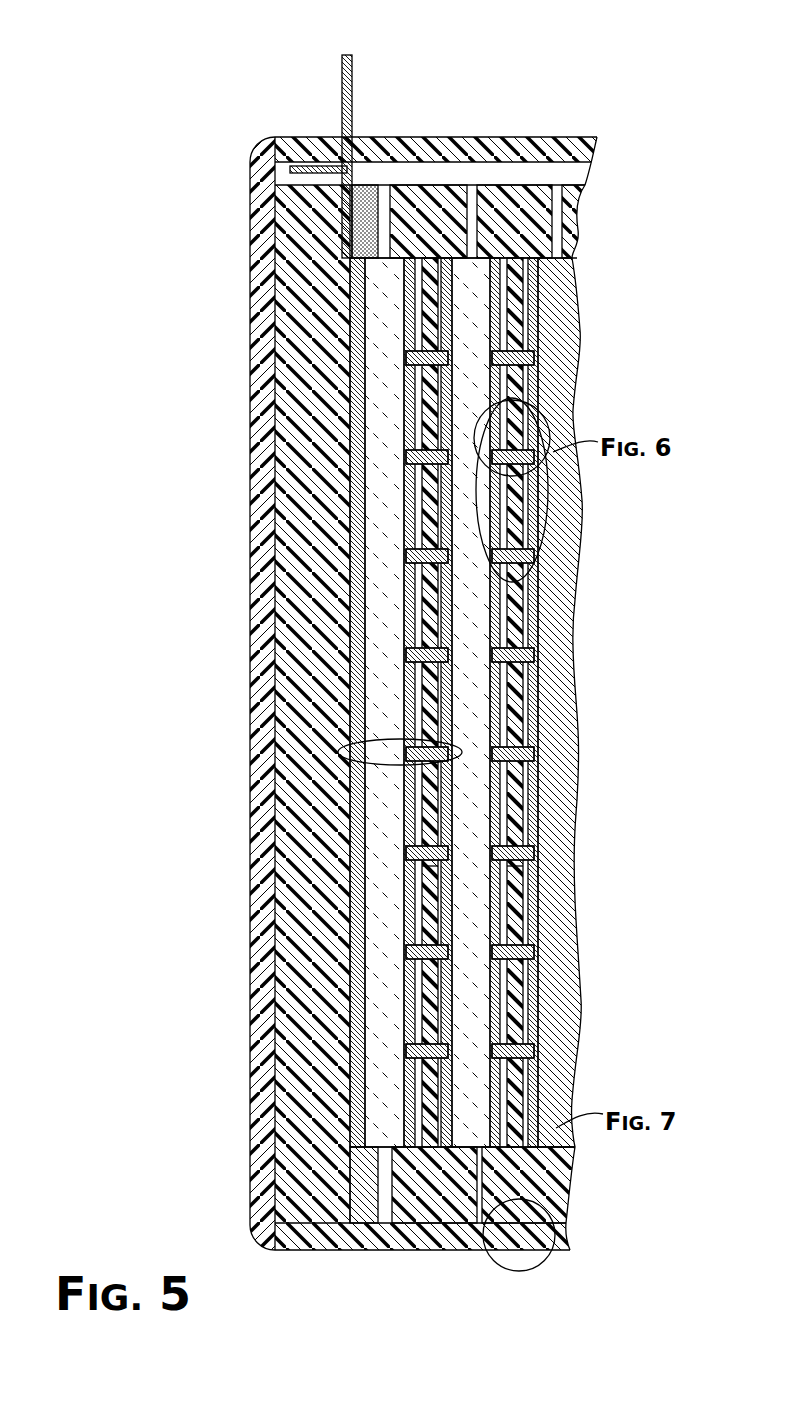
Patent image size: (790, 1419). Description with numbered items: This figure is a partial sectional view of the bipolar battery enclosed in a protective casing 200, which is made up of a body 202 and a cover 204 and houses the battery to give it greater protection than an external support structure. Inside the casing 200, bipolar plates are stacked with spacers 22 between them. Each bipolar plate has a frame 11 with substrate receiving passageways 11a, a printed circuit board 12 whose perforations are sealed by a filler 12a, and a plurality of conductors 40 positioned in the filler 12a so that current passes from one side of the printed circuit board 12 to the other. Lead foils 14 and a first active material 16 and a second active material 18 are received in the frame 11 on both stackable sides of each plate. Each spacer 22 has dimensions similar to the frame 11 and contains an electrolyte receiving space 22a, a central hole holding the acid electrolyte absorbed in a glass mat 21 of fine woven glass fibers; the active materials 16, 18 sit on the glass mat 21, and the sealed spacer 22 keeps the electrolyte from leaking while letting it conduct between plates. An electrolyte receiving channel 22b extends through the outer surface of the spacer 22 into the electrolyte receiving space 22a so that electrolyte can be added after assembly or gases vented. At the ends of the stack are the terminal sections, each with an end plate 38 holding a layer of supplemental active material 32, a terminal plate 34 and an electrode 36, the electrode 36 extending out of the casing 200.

The protective casing 200 is at (236, 229).
The body 202 is at (522, 150).
The cover 204 is at (250, 1047).
The supplemental active material 32 is at (343, 1073).
The terminal plate 34 is at (262, 1168).
The electrode 36 is at (344, 55).
The end plate 38 is at (340, 1228).
The spacer 22 is at (420, 200).
The electrolyte receiving space 22a is at (388, 1135).
The electrolyte receiving channel 22b is at (388, 205).
The frame 11 is at (496, 215).
The substrate receiving passageways 11a is at (516, 215).
The printed circuit board 12 is at (525, 605).
The filler 12a is at (440, 878).
The lead foils 14 is at (522, 655).
The first active material 16 is at (500, 700).
The second active material 18 is at (545, 775).
The absorbed glass mat 21 is at (403, 674).
The conductors 40 is at (552, 468).